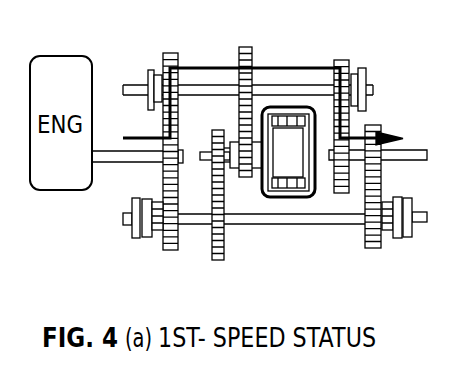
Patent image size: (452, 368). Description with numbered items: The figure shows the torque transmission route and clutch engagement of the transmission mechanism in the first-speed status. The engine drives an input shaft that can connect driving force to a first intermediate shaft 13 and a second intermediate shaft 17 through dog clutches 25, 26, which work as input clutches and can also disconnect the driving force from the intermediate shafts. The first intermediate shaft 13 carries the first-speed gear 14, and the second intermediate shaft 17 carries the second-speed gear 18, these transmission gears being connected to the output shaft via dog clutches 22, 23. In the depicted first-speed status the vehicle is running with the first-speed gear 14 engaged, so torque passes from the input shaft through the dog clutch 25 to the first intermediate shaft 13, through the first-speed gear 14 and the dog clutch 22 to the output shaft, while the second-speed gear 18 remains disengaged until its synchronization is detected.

The first intermediate shaft 13 is at (210, 86).
The first-speed gear 14 is at (338, 60).
The second intermediate shaft 17 is at (278, 224).
The second-speed gear 18 is at (365, 236).
The dog clutch 22 is at (366, 68).
The dog clutch 23 is at (397, 238).
The dog clutch 25 is at (149, 68).
The dog clutch 26 is at (134, 240).